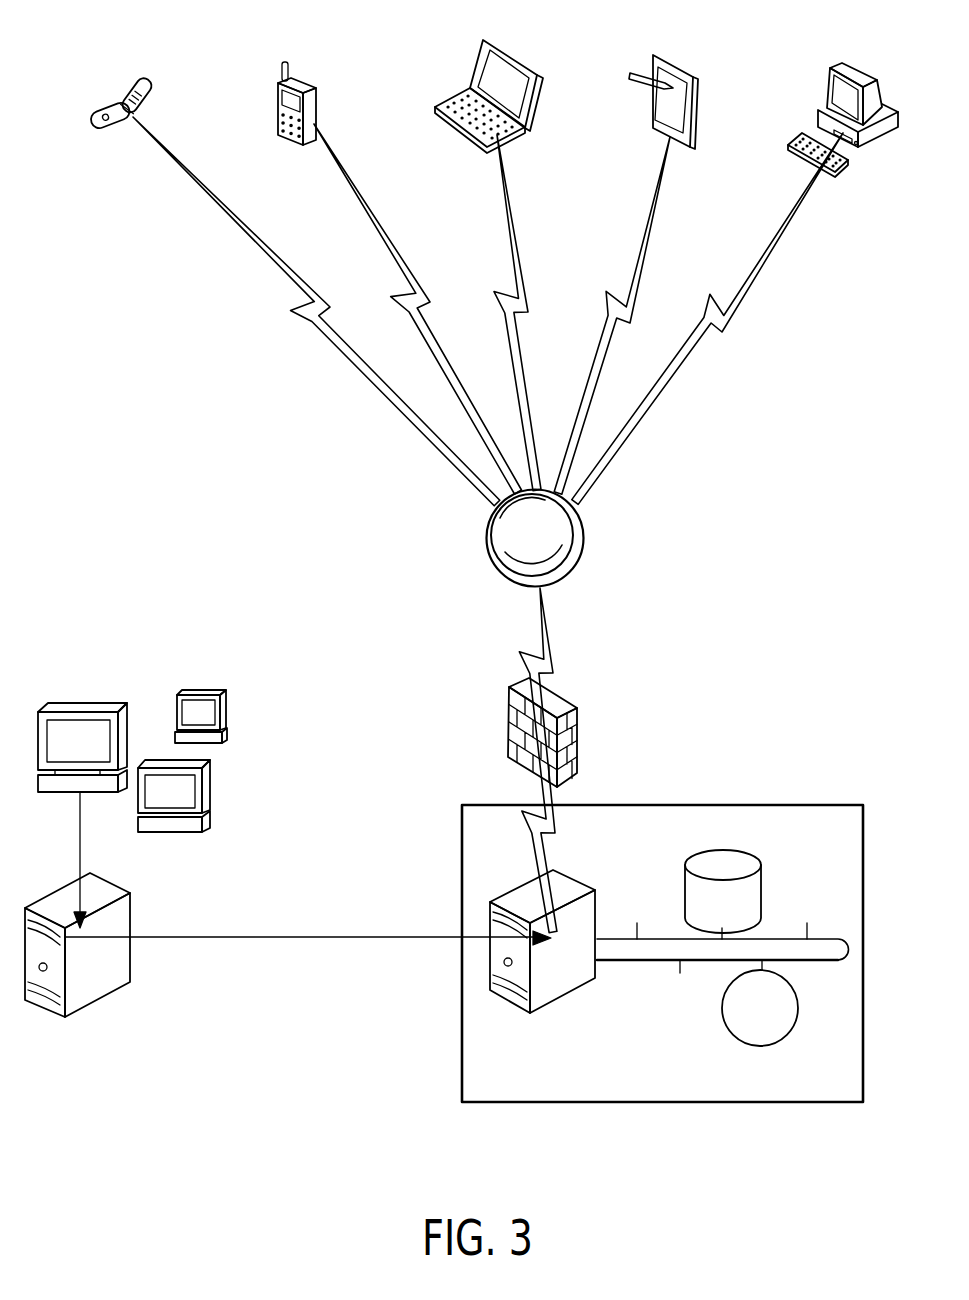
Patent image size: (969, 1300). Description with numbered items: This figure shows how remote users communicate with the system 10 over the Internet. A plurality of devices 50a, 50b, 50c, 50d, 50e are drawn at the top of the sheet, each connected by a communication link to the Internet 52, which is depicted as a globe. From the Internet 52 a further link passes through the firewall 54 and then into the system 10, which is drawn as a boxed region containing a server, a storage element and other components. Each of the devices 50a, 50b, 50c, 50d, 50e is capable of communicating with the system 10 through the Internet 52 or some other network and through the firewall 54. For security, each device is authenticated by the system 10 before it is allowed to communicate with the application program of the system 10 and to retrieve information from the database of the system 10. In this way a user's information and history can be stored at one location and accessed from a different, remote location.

The system 10 is at (603, 1110).
The device 50a is at (847, 65).
The device 50b is at (675, 53).
The device 50c is at (508, 53).
The device 50d is at (305, 78).
The device 50e is at (136, 74).
The Internet 52 is at (585, 538).
The firewall 54 is at (578, 737).